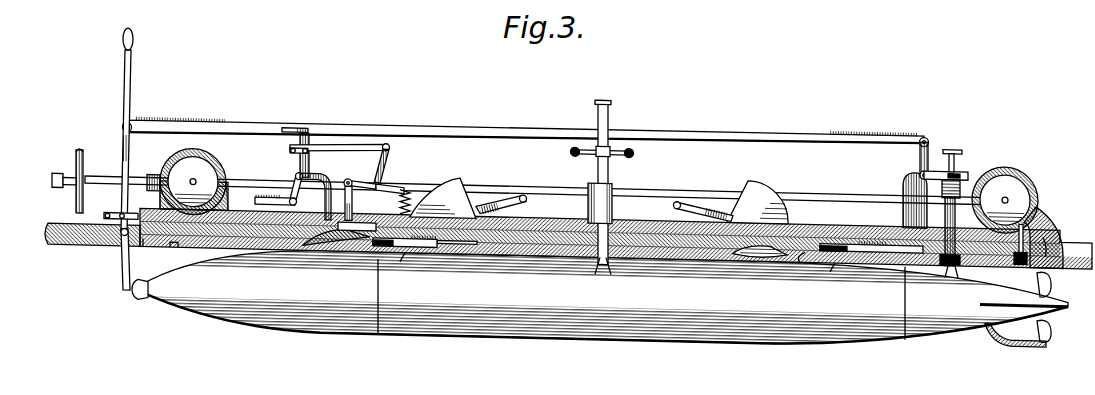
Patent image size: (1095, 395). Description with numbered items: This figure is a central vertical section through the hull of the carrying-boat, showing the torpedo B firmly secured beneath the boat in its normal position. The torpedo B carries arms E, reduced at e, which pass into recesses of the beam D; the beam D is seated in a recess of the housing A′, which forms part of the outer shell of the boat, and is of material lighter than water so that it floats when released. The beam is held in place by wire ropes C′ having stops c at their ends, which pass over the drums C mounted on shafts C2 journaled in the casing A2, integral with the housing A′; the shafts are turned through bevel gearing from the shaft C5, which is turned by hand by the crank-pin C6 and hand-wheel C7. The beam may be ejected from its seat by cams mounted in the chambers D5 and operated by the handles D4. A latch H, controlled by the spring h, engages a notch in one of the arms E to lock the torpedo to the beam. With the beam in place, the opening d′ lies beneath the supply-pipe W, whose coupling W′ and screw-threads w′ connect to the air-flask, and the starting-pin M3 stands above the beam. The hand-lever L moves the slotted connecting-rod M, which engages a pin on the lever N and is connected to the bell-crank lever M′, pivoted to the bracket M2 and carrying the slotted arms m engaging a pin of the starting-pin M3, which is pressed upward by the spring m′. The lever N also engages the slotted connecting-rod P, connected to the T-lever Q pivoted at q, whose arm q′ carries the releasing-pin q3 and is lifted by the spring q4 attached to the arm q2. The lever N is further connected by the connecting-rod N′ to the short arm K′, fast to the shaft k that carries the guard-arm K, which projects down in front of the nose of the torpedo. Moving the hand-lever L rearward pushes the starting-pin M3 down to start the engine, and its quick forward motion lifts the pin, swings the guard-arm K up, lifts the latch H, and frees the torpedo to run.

The torpedo B is at (605, 298).
The short arm K′ is at (100, 222).
The housing A′ is at (624, 210).
The connecting-rod M is at (545, 120).
The hand-lever L is at (128, 87).
The guard-arm K is at (120, 237).
The nose cap b is at (134, 294).
The shaft k is at (112, 234).
The hand-wheel C7 is at (77, 158).
The crank-pin C6 is at (57, 199).
The connecting-rod N′ is at (237, 194).
The drums C is at (185, 159).
The shaft C2 is at (190, 172).
The casing A2 is at (210, 155).
The wire ropes C′ is at (142, 240).
The stops c is at (1050, 211).
The strut n is at (312, 116).
The lever N is at (294, 169).
The connecting-rod P is at (337, 142).
The arm q′ is at (366, 166).
The T-lever Q is at (393, 157).
The pivot q is at (392, 173).
The arm q2 is at (405, 174).
The releasing-pin q3 is at (323, 232).
The spring q4 is at (458, 182).
The chambers D5 is at (492, 188).
The handles D4 is at (522, 184).
The shaft C5 is at (694, 178).
The supply-pipe W is at (610, 98).
The coupling W′ is at (592, 144).
The screw-threads w′ is at (588, 186).
The opening d′ is at (608, 243).
The spring m′ is at (903, 171).
The bell-crank lever M′ is at (913, 116).
The bracket M2 is at (920, 165).
The starting-pin M3 is at (963, 127).
The slotted arms m is at (968, 150).
The reduced arm portion e is at (840, 223).
The rack teeth F′ is at (872, 226).
The arms E is at (383, 244).
The latch H is at (367, 241).
The spring h is at (342, 242).
The beam D is at (523, 237).